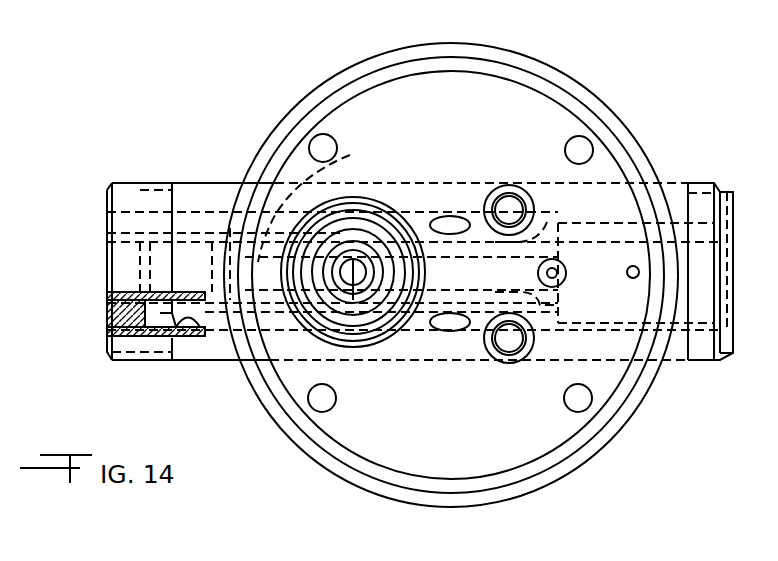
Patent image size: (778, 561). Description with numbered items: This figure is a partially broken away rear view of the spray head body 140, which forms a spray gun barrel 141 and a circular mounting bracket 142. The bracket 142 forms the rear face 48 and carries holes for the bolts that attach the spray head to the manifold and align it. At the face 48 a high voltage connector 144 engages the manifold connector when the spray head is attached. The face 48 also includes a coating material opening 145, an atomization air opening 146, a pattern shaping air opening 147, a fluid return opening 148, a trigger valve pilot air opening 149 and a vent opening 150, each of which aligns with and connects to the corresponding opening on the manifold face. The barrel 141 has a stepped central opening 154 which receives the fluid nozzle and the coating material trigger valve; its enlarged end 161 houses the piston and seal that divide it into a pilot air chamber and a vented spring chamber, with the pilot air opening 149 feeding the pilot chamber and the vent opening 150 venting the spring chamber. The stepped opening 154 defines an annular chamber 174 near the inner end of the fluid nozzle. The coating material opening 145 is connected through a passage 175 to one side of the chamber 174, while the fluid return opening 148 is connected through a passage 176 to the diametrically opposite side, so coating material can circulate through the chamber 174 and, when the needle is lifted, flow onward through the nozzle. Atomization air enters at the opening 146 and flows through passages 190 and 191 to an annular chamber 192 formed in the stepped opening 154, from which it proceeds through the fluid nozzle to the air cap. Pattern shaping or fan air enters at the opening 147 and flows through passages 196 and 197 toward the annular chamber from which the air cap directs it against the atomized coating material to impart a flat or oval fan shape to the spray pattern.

The body 140 is at (614, 90).
The face 48 is at (553, 435).
The spray gun barrel 141 is at (195, 183).
The circular mounting bracket 142 is at (648, 387).
The high voltage connector 144 is at (395, 345).
The coating material opening 145 is at (450, 215).
The atomization air opening 146 is at (512, 346).
The pattern shaping air opening 147 is at (508, 196).
The fluid return opening 148 is at (458, 330).
The trigger valve pilot air opening 149 is at (560, 271).
The vent opening 150 is at (639, 268).
The stepped central opening 154 is at (574, 294).
The enlarged end 161 is at (662, 182).
The annular chamber 174 is at (338, 165).
The passage 175 is at (424, 176).
The passage 176 is at (302, 337).
The passage 190 is at (508, 292).
The passage 191 is at (201, 338).
The annular chamber 192 is at (166, 338).
The passage 196 is at (556, 223).
The passage 197 is at (136, 208).